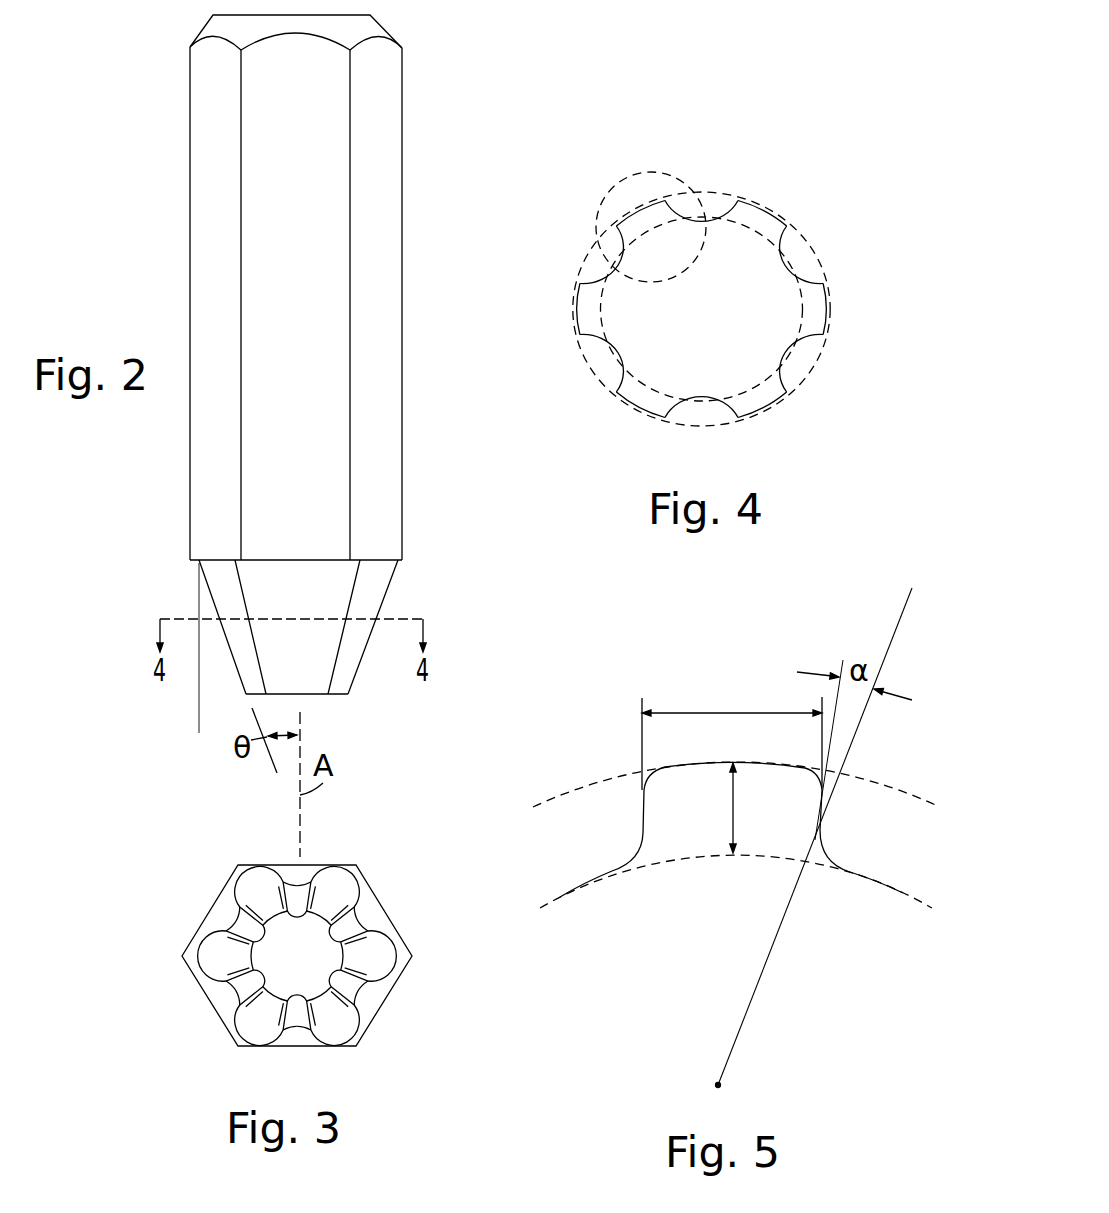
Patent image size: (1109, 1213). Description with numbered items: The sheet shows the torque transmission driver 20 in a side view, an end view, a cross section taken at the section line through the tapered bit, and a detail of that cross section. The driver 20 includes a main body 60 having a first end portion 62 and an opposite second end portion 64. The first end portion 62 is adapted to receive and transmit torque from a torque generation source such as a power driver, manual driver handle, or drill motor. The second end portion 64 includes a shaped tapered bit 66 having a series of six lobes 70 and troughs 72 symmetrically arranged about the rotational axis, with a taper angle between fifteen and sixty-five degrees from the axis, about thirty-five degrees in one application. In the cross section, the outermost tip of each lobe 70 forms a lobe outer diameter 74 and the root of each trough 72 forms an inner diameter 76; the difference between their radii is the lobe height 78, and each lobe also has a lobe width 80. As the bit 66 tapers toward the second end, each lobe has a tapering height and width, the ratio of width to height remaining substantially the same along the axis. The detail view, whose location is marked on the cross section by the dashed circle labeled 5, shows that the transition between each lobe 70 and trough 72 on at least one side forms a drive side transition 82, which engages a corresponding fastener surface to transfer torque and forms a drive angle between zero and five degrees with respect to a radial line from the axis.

In FIG. 2, the torque transmission driver 20 is at (157, 459).
In FIG. 2, the first end portion 62 is at (430, 111).
In FIG. 2, the main body 60 is at (388, 332).
In FIG. 2, the second end portion 64 is at (218, 676).
In FIG. 2, the tapered bit 66 is at (347, 662).
In FIG. 3, the tapered bit 66 is at (307, 949).
In FIG. 3, the lobe 70 is at (345, 887).
In FIG. 4, the lobe 70 is at (760, 405).
In FIG. 3, the trough 72 is at (352, 928).
In FIG. 4, the trough 72 is at (793, 364).
In FIG. 4, the lobe outer diameter 74 is at (806, 253).
In FIG. 5, the lobe outer diameter 74 is at (887, 789).
In FIG. 4, the inner diameter 76 is at (797, 312).
In FIG. 5, the inner diameter 76 is at (688, 858).
In FIG. 5, the lobe height 78 is at (737, 812).
In FIG. 5, the lobe width 80 is at (718, 712).
In FIG. 5, the drive side transition 82 is at (640, 812).
In FIG. 4, the detail circle 5 is at (622, 186).